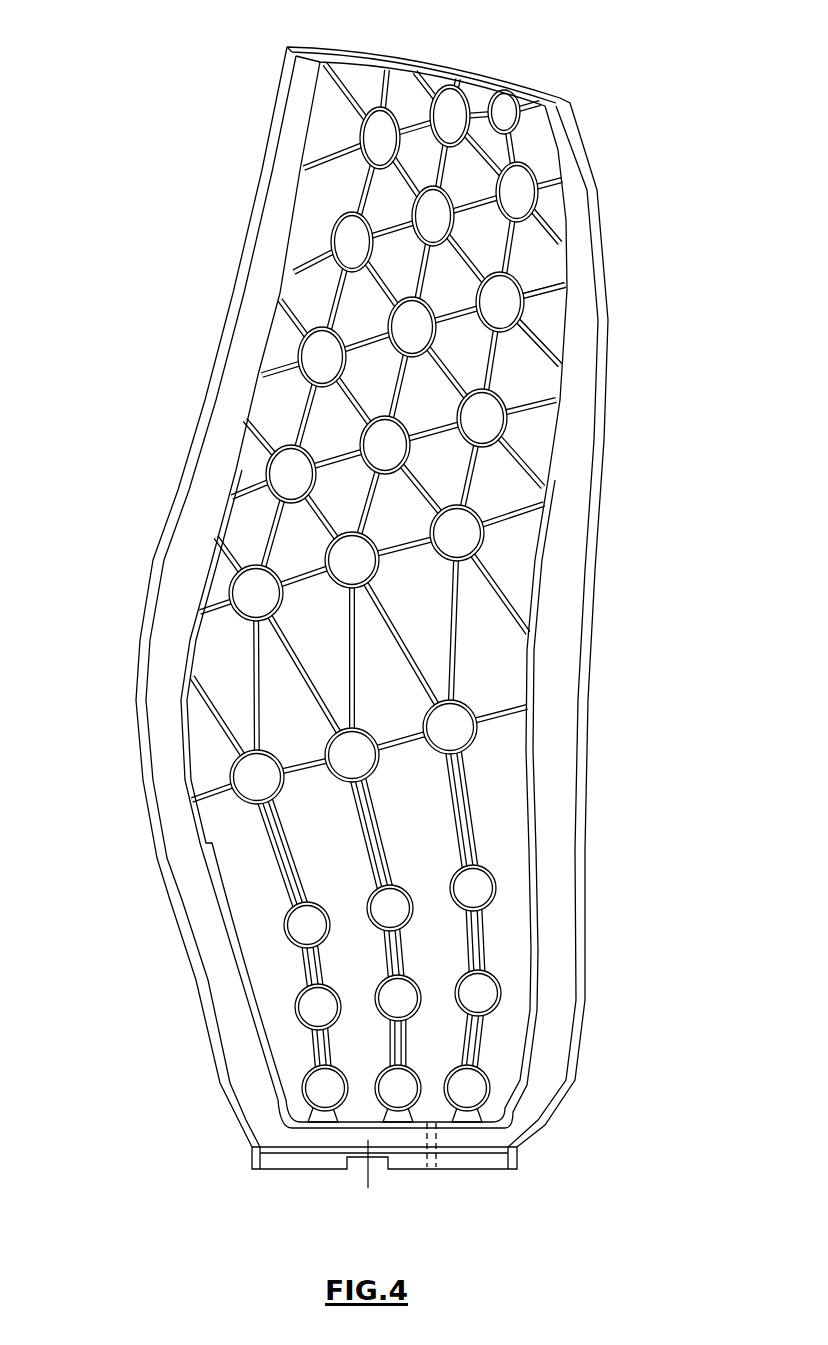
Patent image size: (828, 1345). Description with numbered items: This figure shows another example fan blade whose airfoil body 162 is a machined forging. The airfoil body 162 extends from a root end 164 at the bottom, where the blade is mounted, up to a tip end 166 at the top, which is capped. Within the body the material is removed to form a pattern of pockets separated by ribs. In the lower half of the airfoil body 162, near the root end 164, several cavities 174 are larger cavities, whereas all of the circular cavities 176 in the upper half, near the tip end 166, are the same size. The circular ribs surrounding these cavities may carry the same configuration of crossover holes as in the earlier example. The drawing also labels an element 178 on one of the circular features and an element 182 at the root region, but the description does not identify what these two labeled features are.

The airfoil body 162 is at (142, 427).
The root end 164 is at (467, 1155).
The tip end 166 is at (450, 67).
The cavities 174 is at (548, 325).
The circular cavities 176 is at (512, 258).
The node 178 is at (523, 197).
The passage 182 is at (433, 1162).